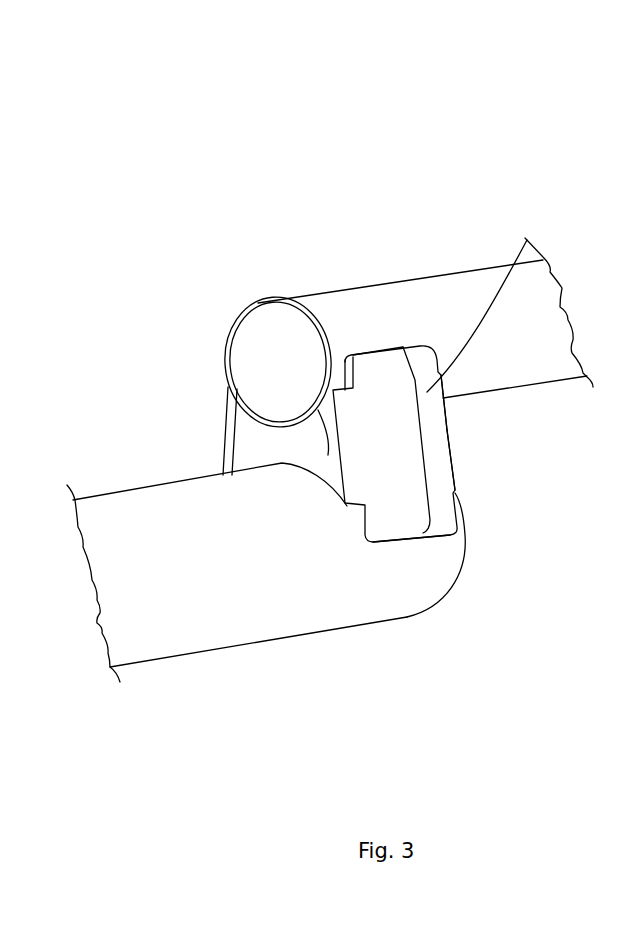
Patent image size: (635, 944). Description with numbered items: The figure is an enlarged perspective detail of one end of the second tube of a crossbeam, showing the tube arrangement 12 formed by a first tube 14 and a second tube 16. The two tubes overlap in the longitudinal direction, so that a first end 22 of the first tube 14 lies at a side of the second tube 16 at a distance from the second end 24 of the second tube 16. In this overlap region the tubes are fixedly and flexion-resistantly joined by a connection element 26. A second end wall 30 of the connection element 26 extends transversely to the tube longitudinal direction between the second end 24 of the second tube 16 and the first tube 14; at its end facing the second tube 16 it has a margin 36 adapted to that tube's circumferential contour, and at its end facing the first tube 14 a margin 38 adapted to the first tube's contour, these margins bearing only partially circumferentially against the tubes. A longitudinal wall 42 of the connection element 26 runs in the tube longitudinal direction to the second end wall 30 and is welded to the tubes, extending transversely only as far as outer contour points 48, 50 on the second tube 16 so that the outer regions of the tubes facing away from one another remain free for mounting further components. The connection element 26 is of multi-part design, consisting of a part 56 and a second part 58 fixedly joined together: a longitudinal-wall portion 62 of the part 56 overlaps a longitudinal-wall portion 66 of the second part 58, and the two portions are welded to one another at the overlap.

The tube arrangement 12 is at (529, 178).
The first tube 14 is at (297, 584).
The second tube 16 is at (436, 287).
The first end 22 is at (453, 567).
The second end 24 is at (292, 310).
The connection element 26 is at (462, 441).
The second end wall 30 is at (267, 443).
The margin 36 is at (328, 455).
The margin 38 is at (278, 463).
The longitudinal wall 42 is at (374, 456).
The outer contour point 48 is at (456, 454).
The outer contour point 50 is at (408, 537).
The part 56 is at (462, 470).
The second part 58 is at (397, 556).
The longitudinal-wall portion 62 is at (545, 262).
The longitudinal-wall portion 66 is at (370, 400).